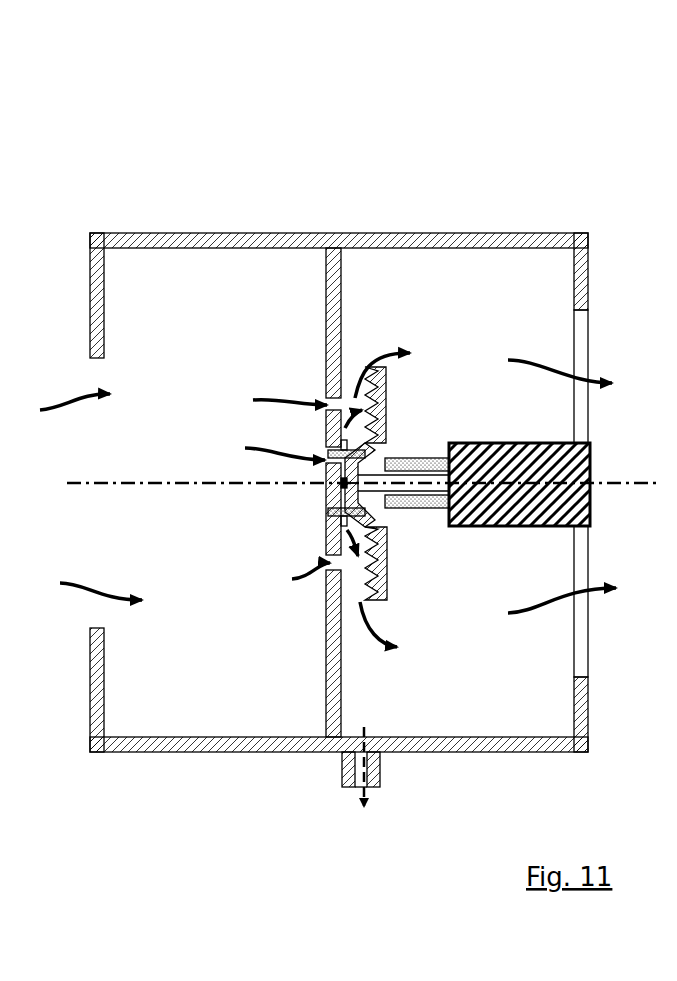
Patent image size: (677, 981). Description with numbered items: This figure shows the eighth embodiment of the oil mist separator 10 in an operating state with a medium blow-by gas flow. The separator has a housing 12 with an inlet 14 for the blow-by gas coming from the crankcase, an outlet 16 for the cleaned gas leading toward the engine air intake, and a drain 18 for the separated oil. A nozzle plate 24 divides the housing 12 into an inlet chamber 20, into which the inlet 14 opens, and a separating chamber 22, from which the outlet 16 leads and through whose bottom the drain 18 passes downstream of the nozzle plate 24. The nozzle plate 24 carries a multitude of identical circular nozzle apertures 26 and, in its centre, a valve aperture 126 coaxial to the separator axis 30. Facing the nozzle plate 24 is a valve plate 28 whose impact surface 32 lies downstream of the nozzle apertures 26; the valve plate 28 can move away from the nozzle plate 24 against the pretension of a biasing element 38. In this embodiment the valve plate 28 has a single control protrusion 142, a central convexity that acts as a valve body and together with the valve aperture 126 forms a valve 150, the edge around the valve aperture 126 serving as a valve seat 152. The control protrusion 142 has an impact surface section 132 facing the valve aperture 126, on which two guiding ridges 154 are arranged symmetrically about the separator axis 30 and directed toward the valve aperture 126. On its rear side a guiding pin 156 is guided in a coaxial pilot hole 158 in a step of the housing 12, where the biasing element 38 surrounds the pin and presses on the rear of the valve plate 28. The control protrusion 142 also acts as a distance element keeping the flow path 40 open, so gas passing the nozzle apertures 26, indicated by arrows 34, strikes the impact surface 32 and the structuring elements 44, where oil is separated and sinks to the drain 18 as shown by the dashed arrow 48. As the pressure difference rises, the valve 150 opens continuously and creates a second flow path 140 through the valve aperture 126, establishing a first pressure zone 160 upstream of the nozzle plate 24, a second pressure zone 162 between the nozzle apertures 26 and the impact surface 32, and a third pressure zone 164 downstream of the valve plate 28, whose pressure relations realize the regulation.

The oil mist separator 10 is at (106, 178).
The housing 12 is at (103, 231).
The inlet 14 is at (97, 380).
The outlet 16 is at (588, 543).
The drain 18 is at (378, 790).
The inlet chamber 20 is at (144, 305).
The separating chamber 22 is at (531, 282).
The nozzle plate 24 is at (326, 292).
The nozzle apertures 26 is at (327, 592).
The valve plate 28 is at (376, 395).
The separator axis 30 is at (100, 489).
The impact surface 32 is at (345, 400).
The arrows 34 is at (325, 398).
The biasing element 38 is at (432, 470).
The flow path 40 is at (352, 360).
The structuring elements 44 is at (326, 622).
The dashed arrow 48 is at (355, 765).
The valve aperture 126 is at (327, 475).
The impact surface section 132 is at (327, 488).
The second flow path 140 is at (327, 445).
The control protrusion 142 is at (330, 500).
The valve 150 is at (327, 495).
The valve seat 152 is at (327, 440).
The guiding ridges 154 is at (330, 510).
The guiding pin 156 is at (395, 490).
The pilot hole 158 is at (438, 530).
The first pressure zone 160 is at (160, 708).
The second pressure zone 162 is at (336, 375).
The third pressure zone 164 is at (467, 700).